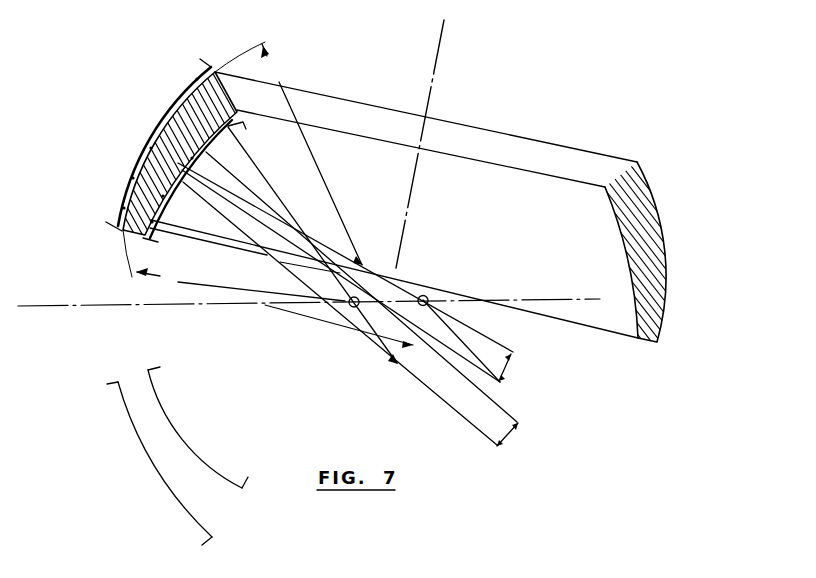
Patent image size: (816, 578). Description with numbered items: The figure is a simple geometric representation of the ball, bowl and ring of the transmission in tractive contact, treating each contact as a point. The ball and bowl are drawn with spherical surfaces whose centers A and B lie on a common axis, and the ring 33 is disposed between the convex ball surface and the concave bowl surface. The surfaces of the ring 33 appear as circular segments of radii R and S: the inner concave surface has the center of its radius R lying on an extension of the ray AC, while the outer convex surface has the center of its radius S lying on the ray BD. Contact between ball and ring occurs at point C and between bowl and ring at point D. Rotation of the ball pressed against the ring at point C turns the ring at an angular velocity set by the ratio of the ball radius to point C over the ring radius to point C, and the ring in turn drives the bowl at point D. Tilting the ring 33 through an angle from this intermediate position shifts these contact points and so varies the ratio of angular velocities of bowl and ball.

The ring 33 is at (663, 228).
The center of ball spherical surface A is at (349, 305).
The center of bowl spherical surface B is at (427, 296).
The contact point between ball and ring C is at (178, 178).
The contact point between bowl and ring D is at (152, 148).
The radius of inner concave ring surface R is at (240, 284).
The radius of outer convex ring surface S is at (311, 154).